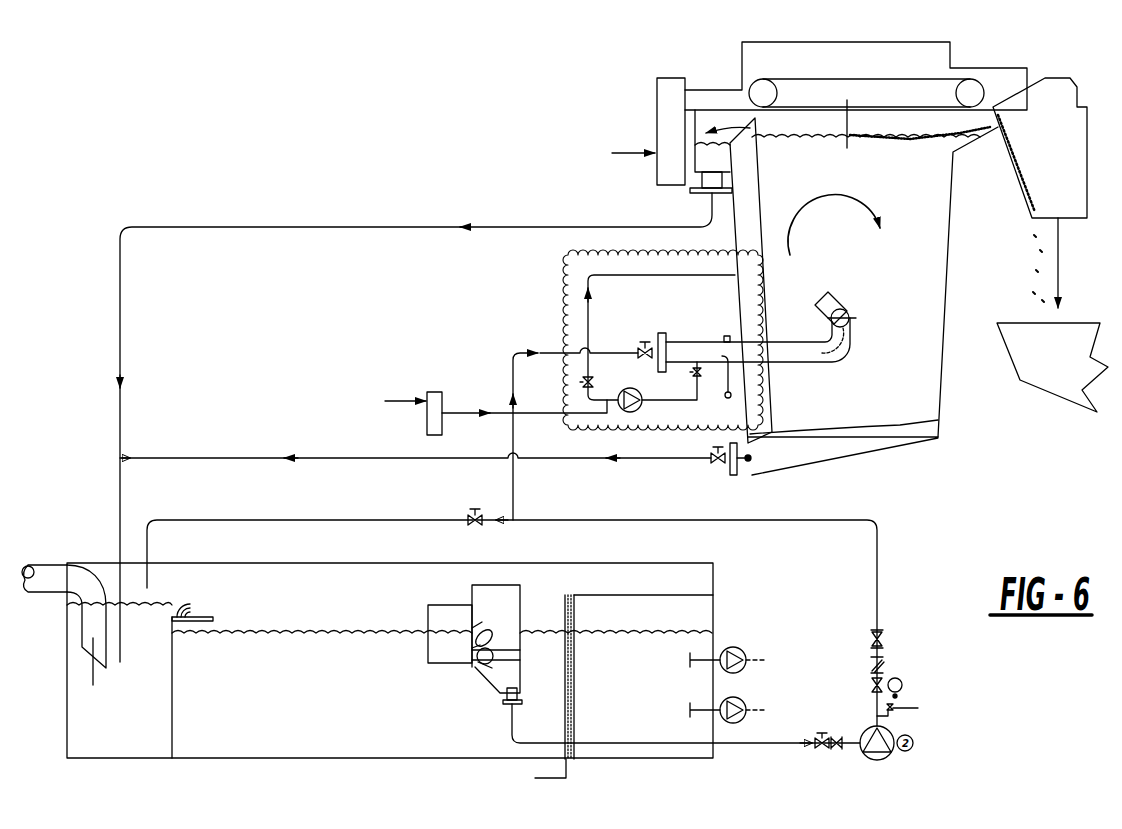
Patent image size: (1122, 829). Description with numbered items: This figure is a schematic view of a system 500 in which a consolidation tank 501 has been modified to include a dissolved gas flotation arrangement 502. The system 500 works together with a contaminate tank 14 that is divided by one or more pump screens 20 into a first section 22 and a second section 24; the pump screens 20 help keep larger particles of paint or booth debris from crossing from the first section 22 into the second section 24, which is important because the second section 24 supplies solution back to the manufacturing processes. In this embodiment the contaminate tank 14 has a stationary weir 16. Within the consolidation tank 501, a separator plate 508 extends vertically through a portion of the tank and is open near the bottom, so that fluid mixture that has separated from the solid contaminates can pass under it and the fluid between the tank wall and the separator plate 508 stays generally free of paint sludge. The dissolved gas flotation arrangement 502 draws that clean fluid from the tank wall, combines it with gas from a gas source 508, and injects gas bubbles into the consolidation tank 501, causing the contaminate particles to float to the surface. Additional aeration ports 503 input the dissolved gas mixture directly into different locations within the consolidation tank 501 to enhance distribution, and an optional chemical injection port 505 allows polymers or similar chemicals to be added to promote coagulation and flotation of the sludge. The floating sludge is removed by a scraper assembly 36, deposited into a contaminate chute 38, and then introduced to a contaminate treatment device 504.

The system 500 is at (317, 145).
The scraper assembly 36 is at (937, 57).
The contaminate chute 38 is at (1064, 167).
The consolidation tank 501 is at (922, 281).
The separator plate 508 is at (437, 392).
The dissolved gas flotation arrangement 502 is at (503, 280).
The aeration ports 503 is at (793, 322).
The chemical injection port 505 is at (725, 397).
The contaminate treatment device 504 is at (1064, 366).
The contaminate tank 14 is at (232, 767).
The first section 22 is at (321, 713).
The stationary weir 16 is at (490, 670).
The pump screens 20 is at (584, 769).
The second section 24 is at (640, 708).